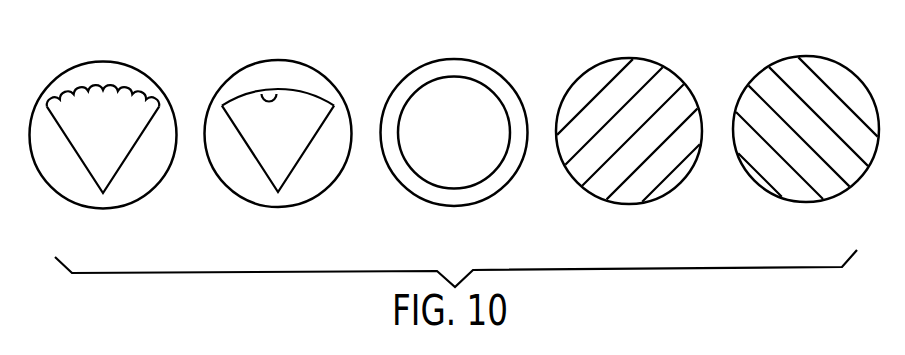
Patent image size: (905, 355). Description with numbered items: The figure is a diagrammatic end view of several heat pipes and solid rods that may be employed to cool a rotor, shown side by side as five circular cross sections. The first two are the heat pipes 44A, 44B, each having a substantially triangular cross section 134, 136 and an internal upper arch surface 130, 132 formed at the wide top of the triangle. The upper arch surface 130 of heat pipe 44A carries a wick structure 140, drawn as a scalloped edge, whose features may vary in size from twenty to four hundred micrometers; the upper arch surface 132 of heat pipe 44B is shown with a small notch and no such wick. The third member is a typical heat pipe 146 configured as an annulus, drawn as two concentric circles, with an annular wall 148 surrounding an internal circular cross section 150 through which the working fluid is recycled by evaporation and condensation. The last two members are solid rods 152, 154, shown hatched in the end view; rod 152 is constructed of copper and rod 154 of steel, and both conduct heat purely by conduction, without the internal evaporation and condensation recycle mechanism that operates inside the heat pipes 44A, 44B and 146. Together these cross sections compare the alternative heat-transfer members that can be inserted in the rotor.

The heat pipe 44A is at (157, 187).
The heat pipe 44B is at (332, 78).
The internal upper arch surface 130 is at (70, 92).
The internal upper arch surface 132 is at (260, 95).
The substantially triangular cross section 134 is at (120, 148).
The substantially triangular cross section 136 is at (297, 148).
The wick structure 140 is at (122, 88).
The typical heat pipe 146 is at (508, 78).
The annular layer 148 is at (420, 77).
The internal circular cross section 150 is at (438, 147).
The solid rod 152 is at (683, 78).
The solid rod 154 is at (753, 180).